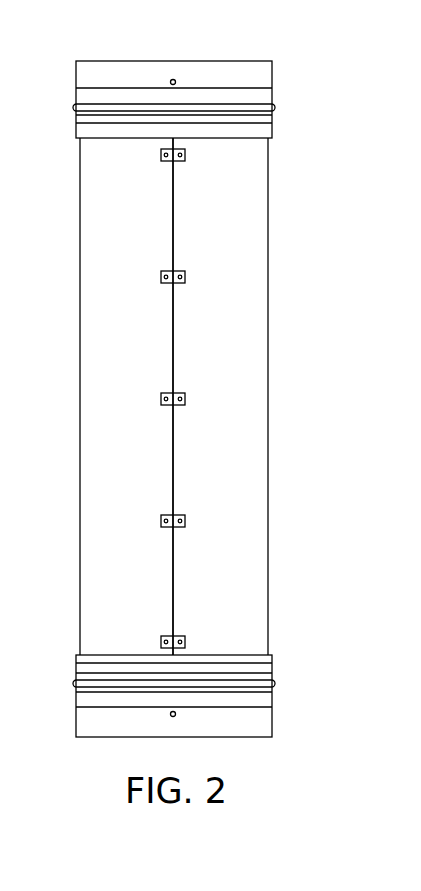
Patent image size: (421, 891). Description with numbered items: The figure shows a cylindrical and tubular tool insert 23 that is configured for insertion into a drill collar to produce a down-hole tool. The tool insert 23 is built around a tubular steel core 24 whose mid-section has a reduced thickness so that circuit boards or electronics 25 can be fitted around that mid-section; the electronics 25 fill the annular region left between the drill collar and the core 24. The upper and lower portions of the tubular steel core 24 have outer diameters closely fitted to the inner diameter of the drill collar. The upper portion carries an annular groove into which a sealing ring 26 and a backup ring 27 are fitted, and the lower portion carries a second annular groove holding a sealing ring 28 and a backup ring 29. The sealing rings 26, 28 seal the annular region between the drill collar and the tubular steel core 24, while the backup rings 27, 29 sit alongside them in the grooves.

The tool insert 23 is at (238, 44).
The tubular steel core 24 is at (258, 78).
The circuit boards or electronics 25 is at (260, 198).
The sealing ring 26 is at (273, 107).
The backup ring 27 is at (273, 116).
The sealing ring 28 is at (273, 687).
The backup ring 29 is at (273, 675).